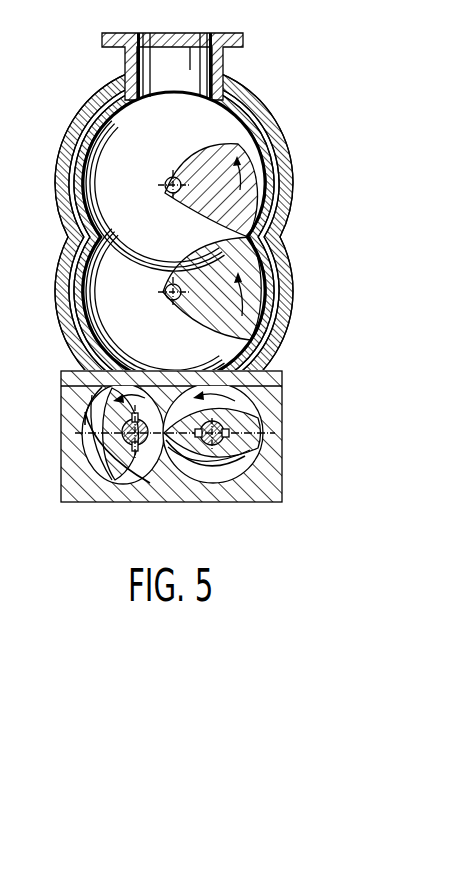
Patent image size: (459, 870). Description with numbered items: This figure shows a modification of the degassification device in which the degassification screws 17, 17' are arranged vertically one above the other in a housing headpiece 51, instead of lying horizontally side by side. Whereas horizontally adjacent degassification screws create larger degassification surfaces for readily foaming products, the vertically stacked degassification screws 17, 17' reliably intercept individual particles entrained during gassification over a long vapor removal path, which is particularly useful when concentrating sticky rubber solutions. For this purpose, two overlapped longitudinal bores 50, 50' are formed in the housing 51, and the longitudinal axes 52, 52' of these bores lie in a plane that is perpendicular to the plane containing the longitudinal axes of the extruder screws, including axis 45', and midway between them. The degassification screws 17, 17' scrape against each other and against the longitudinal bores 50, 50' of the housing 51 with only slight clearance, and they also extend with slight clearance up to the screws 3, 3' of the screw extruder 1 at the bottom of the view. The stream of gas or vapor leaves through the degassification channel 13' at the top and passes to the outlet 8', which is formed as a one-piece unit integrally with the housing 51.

The screw extruder 1 is at (188, 460).
The screw of the screw extruder 3 is at (239, 428).
The screw of the screw extruder 3' is at (87, 435).
The outlet 8' is at (195, 52).
The degassification channel 13' is at (176, 49).
The degassification screw 17 is at (143, 237).
The degassification screw 17' is at (158, 237).
The longitudinal axis 45' is at (175, 442).
The longitudinal bore 50 is at (155, 237).
The longitudinal bore 50' is at (159, 237).
The housing headpiece 51 is at (222, 237).
The longitudinal axis of the bore 52 is at (189, 190).
The longitudinal axis of the bore 52' is at (190, 288).